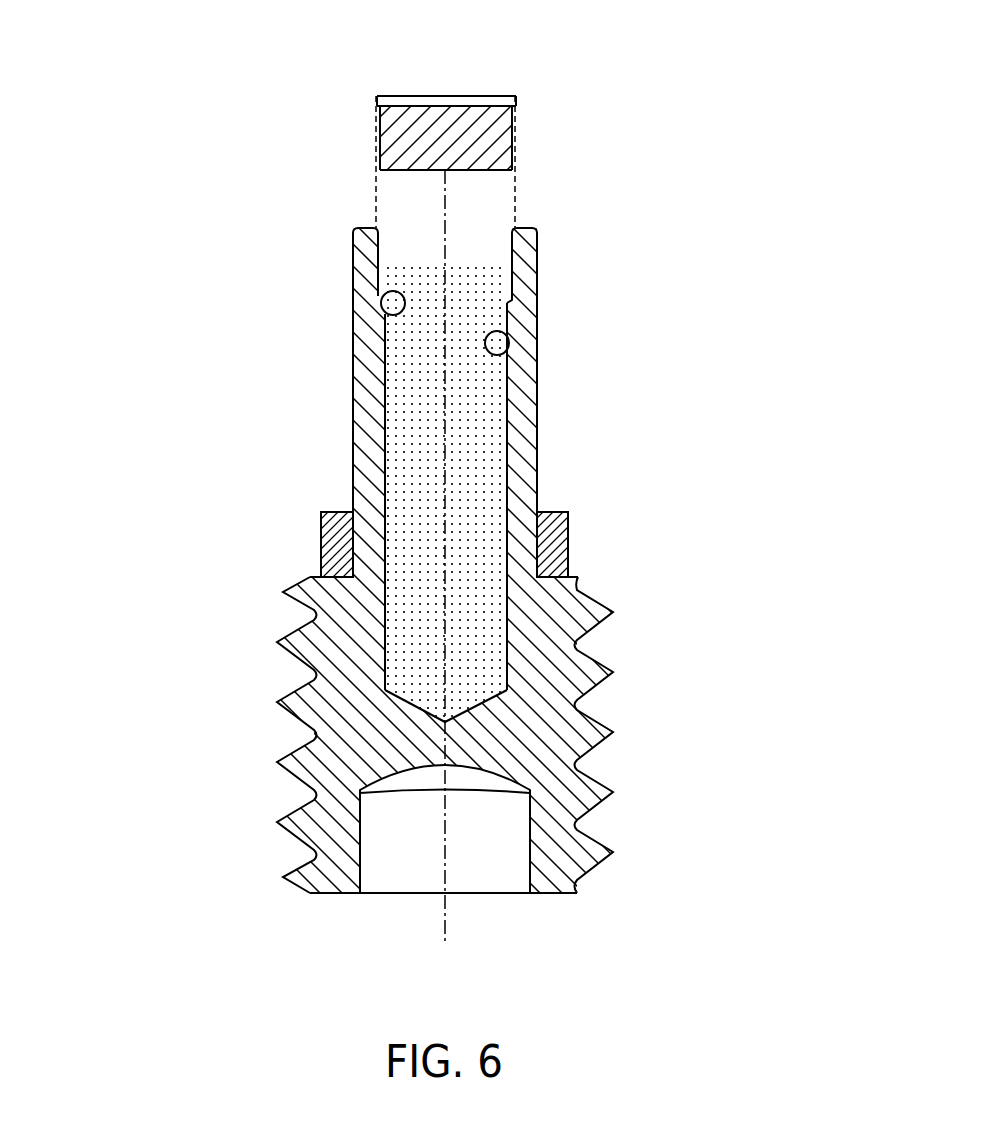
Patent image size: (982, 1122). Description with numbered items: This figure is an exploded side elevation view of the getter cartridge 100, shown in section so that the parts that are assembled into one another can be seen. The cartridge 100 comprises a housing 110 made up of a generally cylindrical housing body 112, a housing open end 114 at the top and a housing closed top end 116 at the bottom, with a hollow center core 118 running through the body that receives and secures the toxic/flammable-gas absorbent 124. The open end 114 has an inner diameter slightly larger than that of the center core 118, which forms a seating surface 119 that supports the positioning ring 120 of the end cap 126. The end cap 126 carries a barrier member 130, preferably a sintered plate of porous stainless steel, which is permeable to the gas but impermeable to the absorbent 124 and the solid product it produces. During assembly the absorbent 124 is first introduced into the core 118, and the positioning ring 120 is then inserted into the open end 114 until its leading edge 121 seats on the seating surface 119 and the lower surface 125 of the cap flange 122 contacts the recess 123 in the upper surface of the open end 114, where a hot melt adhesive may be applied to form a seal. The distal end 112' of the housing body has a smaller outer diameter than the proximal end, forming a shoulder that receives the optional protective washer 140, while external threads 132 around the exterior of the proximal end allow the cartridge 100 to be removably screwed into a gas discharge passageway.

The getter cartridge 100 is at (150, 307).
The housing 110 is at (267, 88).
The housing body 112 is at (506, 459).
The distal end 112' is at (504, 575).
The housing open end 114 is at (383, 267).
The housing closed top end 116 is at (527, 866).
The hollow center core 118 is at (485, 364).
The seating surface 119 is at (402, 312).
The positioning ring 120 is at (465, 147).
The leading edge 121 is at (400, 170).
The outer flange 122 is at (377, 97).
The recess 123 is at (378, 226).
The toxic/flammable-gas absorbent 124 is at (410, 436).
The lower surface 125 is at (378, 101).
The end cap 126 is at (453, 84).
The barrier member 130 is at (470, 107).
The external threads 132 is at (600, 657).
The washer 140 is at (584, 537).